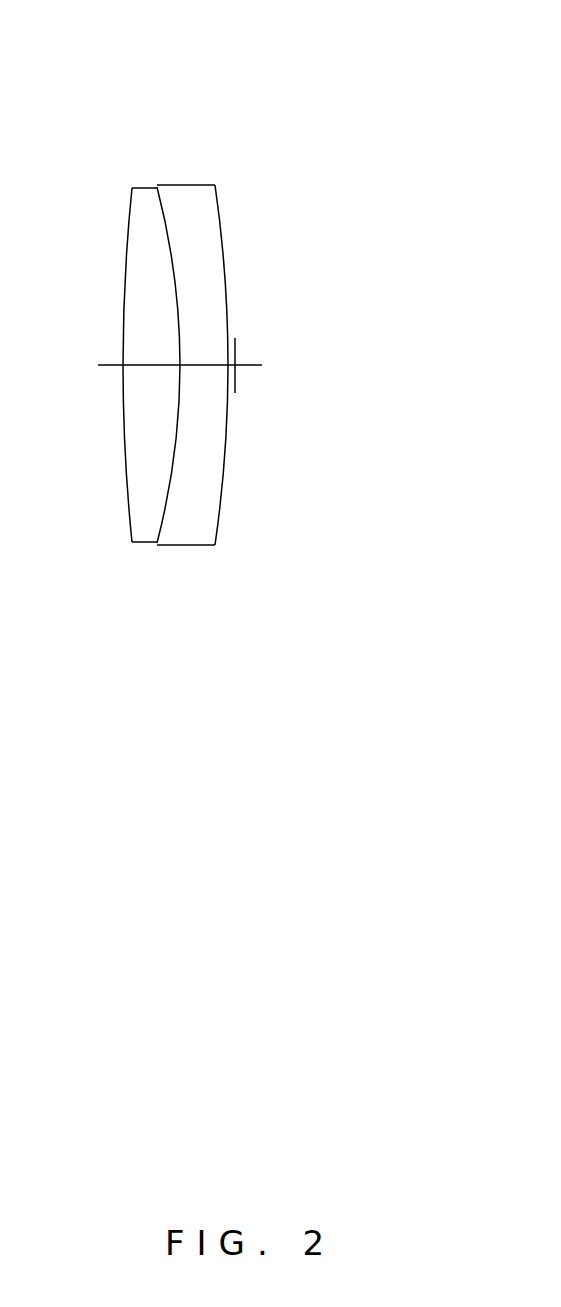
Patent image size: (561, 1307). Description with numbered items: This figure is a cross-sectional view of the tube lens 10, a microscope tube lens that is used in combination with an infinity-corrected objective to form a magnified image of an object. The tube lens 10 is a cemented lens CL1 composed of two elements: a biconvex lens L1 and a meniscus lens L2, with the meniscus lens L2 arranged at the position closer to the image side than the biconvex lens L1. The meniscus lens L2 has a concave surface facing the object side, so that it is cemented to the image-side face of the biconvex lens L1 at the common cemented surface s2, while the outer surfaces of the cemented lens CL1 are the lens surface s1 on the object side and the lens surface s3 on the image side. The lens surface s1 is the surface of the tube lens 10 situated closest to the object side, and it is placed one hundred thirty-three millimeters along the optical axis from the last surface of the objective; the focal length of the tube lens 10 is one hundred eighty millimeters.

The tube lens 10 is at (463, 40).
The cemented lens CL1 is at (213, 680).
The biconvex lens L1 is at (152, 510).
The meniscus lens L2 is at (198, 515).
The lens surface s1 is at (127, 262).
The cemented surface between L1 and L2 s2 is at (173, 263).
The image-side surface of L2 s3 is at (225, 272).